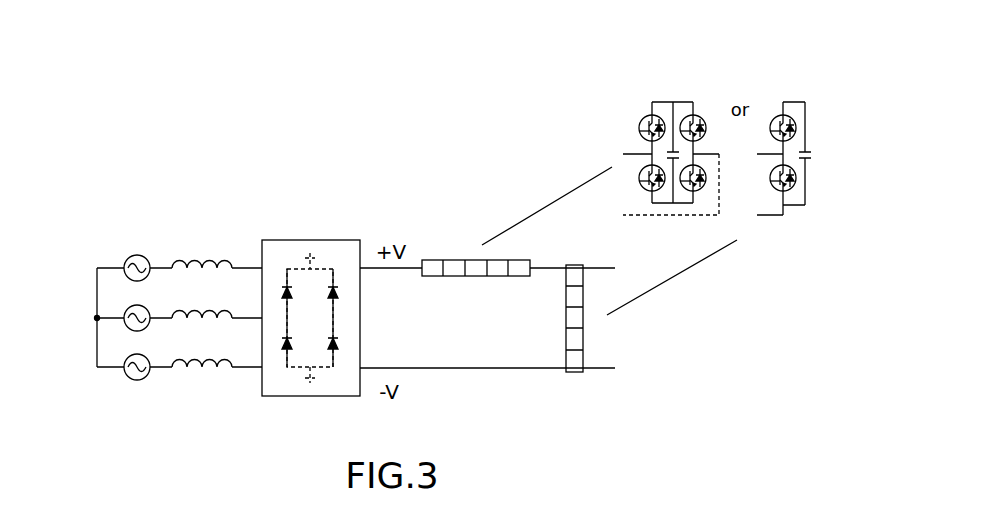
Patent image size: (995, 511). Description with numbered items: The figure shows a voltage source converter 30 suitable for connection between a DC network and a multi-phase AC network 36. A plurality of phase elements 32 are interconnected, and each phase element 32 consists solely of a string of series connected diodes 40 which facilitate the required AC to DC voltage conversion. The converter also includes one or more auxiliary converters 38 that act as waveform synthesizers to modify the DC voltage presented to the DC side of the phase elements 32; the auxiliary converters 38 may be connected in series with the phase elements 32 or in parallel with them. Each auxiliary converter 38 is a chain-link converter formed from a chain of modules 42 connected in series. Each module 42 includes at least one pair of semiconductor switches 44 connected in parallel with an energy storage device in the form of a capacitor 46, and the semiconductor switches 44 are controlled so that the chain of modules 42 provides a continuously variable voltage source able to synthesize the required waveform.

The voltage source converter 30 is at (199, 383).
The phase element 32 is at (306, 240).
The AC network 36 is at (97, 320).
The auxiliary converter 38 is at (456, 259).
The diodes 40 is at (285, 294).
The modules 42 is at (478, 276).
The semiconductor switches 44 is at (792, 118).
The capacitor 46 is at (810, 157).